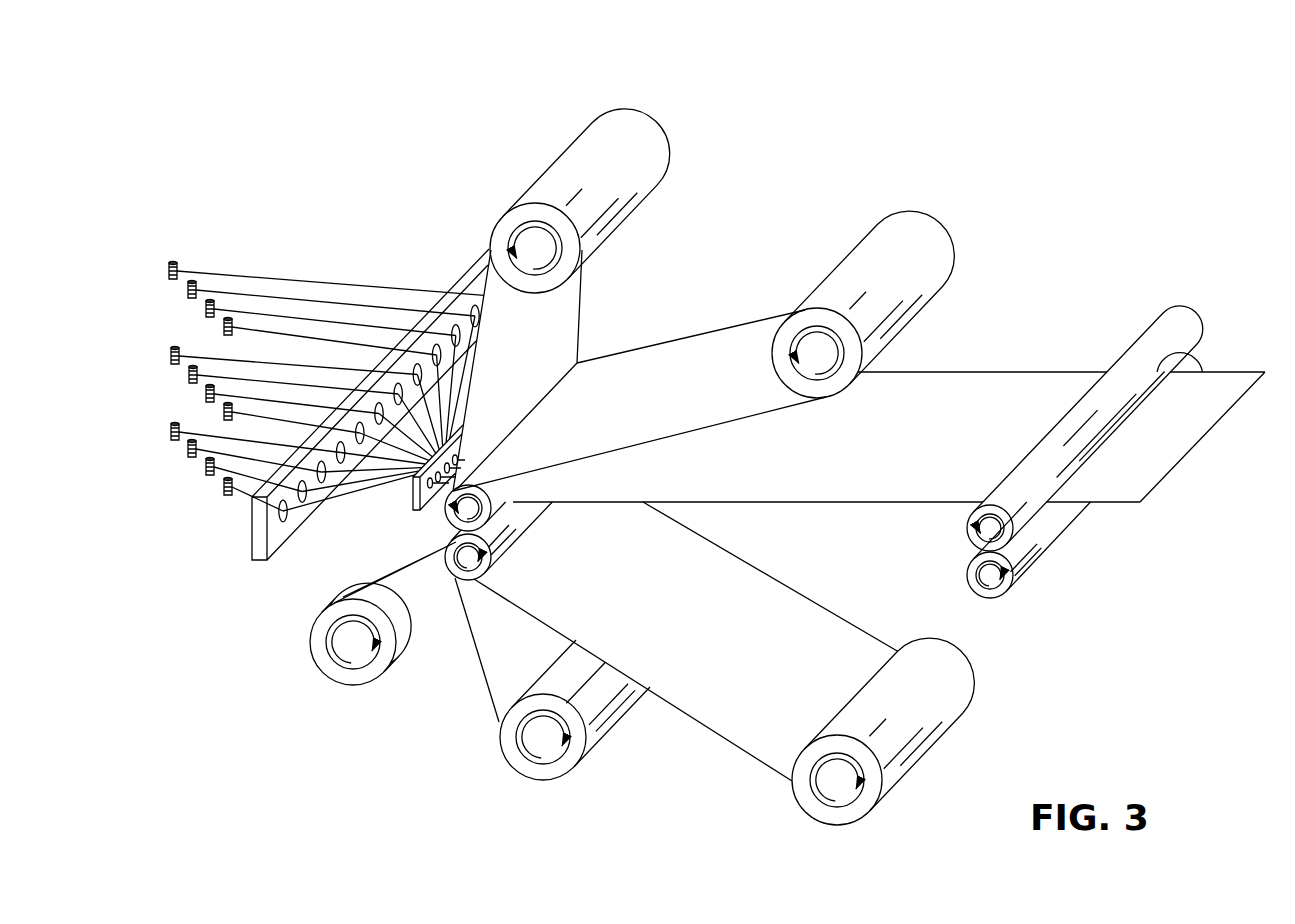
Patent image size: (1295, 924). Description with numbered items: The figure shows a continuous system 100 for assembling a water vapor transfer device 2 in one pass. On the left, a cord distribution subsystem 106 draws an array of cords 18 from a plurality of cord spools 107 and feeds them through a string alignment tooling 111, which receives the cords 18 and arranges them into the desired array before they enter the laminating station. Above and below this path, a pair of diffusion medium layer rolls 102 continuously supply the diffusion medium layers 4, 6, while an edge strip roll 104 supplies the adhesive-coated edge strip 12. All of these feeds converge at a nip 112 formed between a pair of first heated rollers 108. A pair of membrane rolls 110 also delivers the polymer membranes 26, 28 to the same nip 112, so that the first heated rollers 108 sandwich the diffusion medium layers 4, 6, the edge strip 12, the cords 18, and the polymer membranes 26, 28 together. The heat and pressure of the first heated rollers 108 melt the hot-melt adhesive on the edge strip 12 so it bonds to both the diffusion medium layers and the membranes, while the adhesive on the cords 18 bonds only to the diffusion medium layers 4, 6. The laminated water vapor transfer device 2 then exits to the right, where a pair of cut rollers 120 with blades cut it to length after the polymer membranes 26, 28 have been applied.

The continuous system 100 is at (1108, 149).
The water vapor transfer device 2 is at (992, 378).
The diffusion medium layer 4 is at (521, 355).
The diffusion medium layer 6 is at (509, 662).
The edge strip 12 is at (357, 586).
The cords 18 is at (265, 334).
The polymer membrane 26 is at (640, 400).
The polymer membrane 28 is at (670, 625).
The diffusion medium layer rolls 102 is at (662, 120).
The edge strip rolls 104 is at (389, 682).
The cord distribution subsystem 106 is at (346, 302).
The cord spools 107 is at (170, 263).
The first heated rollers 108 is at (464, 582).
The membrane rolls 110 is at (941, 225).
The string alignment tooling 111 is at (414, 334).
The nip 112 is at (445, 538).
The cut rollers 120 is at (1021, 504).